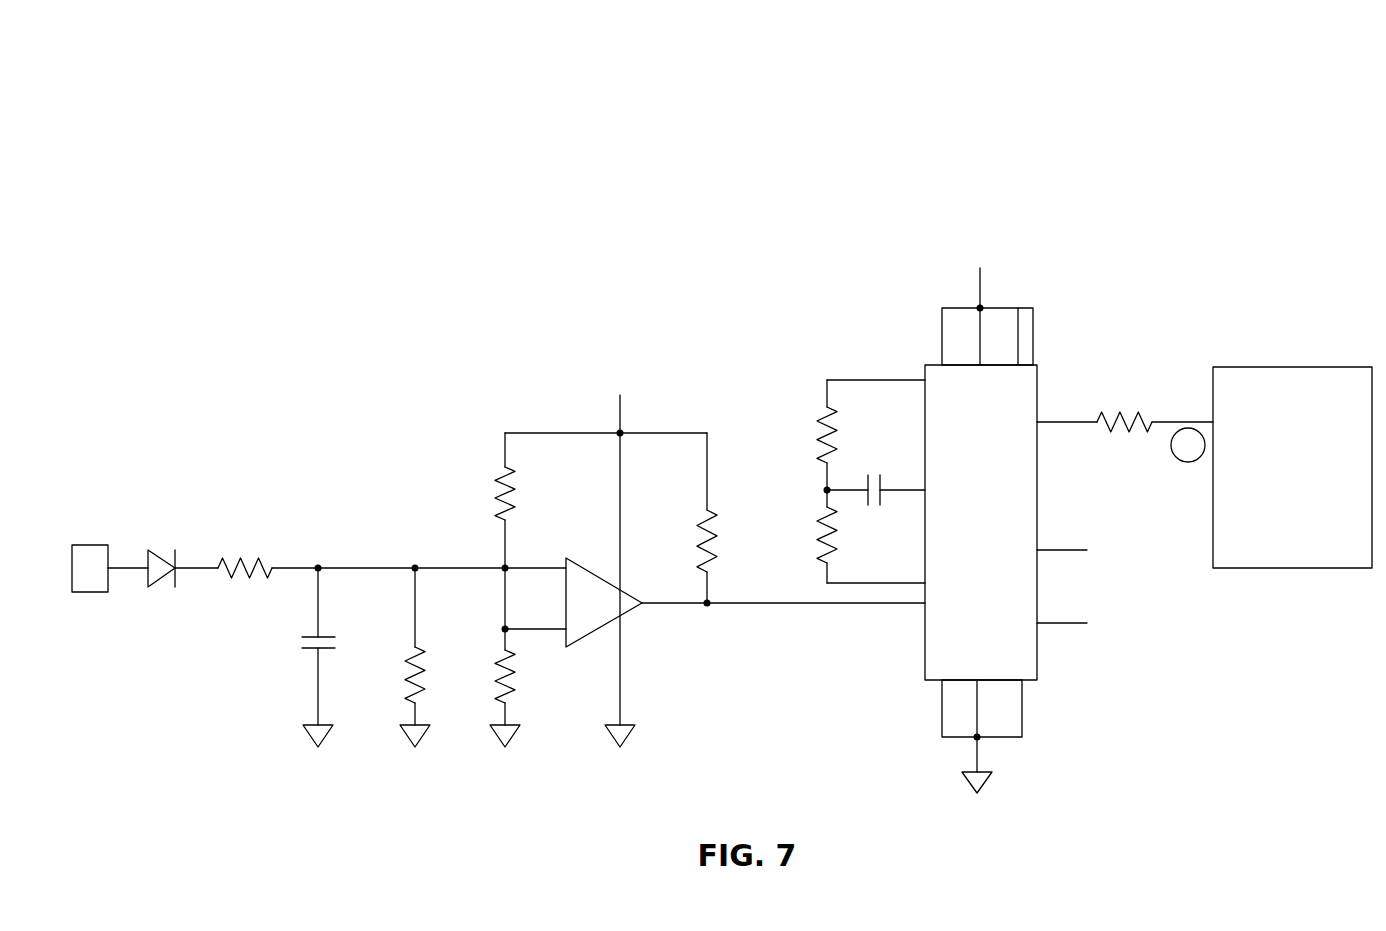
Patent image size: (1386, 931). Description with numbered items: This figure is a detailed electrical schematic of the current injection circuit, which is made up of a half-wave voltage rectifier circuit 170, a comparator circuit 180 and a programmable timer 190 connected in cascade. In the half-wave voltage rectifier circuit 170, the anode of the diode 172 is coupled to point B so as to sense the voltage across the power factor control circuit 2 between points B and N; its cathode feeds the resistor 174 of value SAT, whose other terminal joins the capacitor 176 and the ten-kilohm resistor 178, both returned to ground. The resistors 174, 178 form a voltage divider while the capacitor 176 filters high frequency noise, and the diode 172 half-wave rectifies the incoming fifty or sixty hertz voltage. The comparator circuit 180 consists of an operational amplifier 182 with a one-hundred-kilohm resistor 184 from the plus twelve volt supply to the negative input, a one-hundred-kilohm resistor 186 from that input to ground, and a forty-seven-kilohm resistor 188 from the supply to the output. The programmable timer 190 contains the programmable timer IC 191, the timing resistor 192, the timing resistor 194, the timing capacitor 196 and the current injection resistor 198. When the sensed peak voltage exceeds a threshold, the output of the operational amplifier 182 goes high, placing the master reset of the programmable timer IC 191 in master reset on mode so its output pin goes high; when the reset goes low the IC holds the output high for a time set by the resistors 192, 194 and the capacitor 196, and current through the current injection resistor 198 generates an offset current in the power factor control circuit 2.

The power factor control circuit 2 is at (1252, 366).
The half-wave voltage rectifier circuit 170 is at (319, 590).
The diode 172 is at (158, 584).
The resistor 174 is at (223, 576).
The capacitor 176 is at (328, 637).
The resistor 178 is at (410, 700).
The comparator circuit 180 is at (673, 554).
The operational amplifier 182 is at (631, 613).
The resistor 184 is at (500, 478).
The resistor 186 is at (505, 653).
The resistor 188 is at (706, 518).
The programmable timer 190 is at (976, 514).
The programmable timer IC 191 is at (1037, 443).
The timing resistor 192 is at (823, 412).
The timing resistor 194 is at (825, 568).
The timing capacitor 196 is at (867, 485).
The current injection resistor 198 is at (1146, 418).